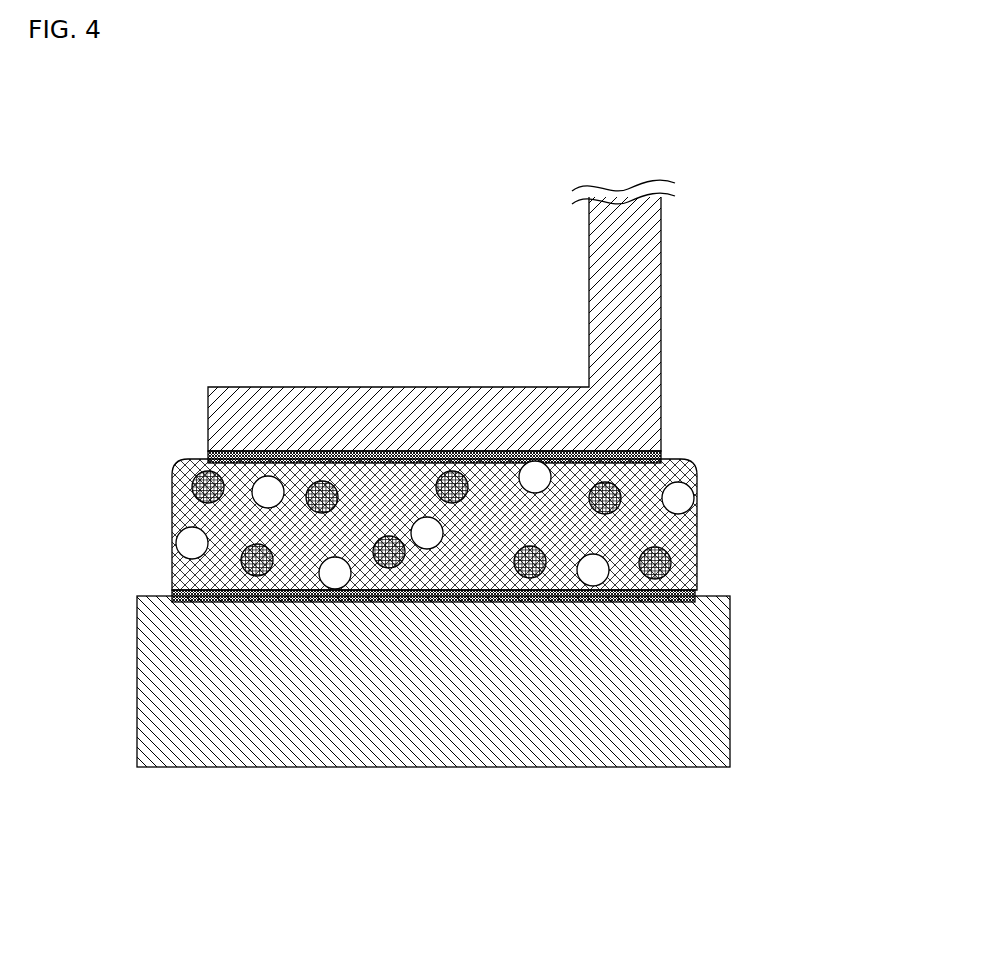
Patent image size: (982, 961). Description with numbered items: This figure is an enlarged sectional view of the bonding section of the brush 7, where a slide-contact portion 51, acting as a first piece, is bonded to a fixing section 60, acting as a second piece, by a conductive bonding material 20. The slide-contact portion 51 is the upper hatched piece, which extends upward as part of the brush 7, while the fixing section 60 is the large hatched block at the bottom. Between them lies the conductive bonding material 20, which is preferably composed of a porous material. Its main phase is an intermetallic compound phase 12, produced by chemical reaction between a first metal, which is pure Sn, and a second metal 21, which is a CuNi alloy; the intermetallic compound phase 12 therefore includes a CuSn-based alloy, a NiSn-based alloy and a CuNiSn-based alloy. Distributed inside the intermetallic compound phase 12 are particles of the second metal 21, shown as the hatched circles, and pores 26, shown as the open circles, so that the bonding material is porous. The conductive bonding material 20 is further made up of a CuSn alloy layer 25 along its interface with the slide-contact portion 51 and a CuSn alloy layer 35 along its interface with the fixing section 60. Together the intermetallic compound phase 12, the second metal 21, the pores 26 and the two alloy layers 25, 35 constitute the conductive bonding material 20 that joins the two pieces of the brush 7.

The brush 7 is at (668, 352).
The slide-contact portion 51 is at (520, 398).
The alloy layer 25 is at (367, 452).
The intermetallic compound phase 12 is at (490, 452).
The second metal 21 is at (452, 472).
The pores 26 is at (271, 488).
The alloy layer 35 is at (378, 603).
The fixing section 60 is at (542, 720).
The conductive bonding material 20 is at (466, 566).